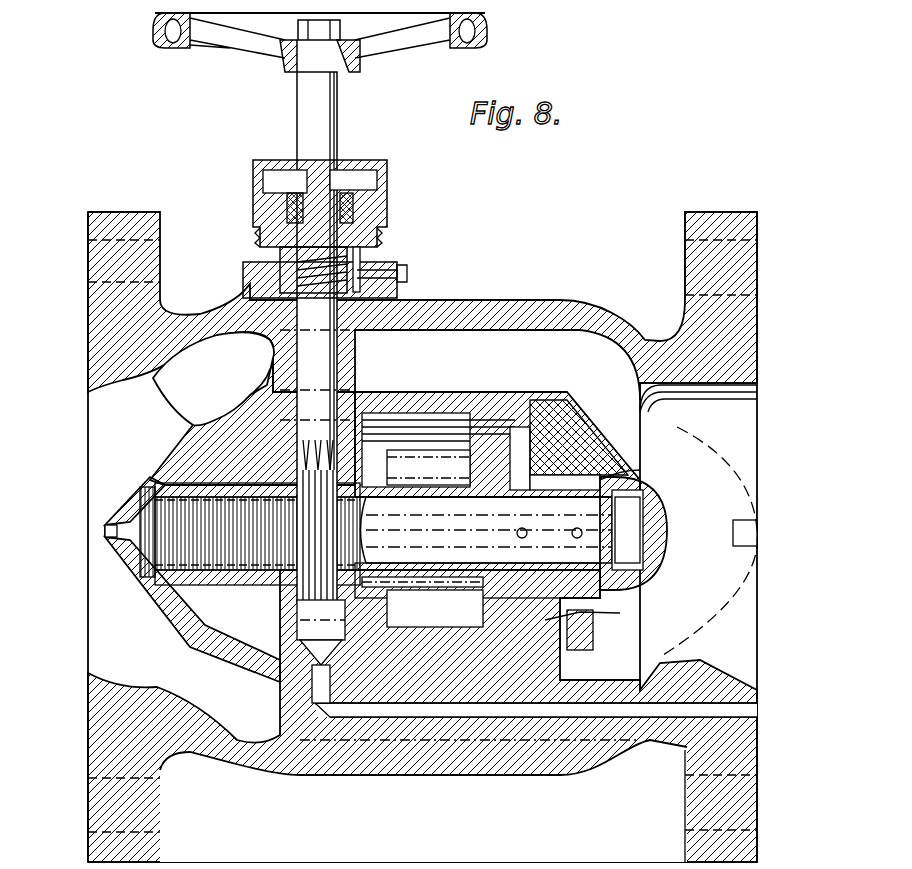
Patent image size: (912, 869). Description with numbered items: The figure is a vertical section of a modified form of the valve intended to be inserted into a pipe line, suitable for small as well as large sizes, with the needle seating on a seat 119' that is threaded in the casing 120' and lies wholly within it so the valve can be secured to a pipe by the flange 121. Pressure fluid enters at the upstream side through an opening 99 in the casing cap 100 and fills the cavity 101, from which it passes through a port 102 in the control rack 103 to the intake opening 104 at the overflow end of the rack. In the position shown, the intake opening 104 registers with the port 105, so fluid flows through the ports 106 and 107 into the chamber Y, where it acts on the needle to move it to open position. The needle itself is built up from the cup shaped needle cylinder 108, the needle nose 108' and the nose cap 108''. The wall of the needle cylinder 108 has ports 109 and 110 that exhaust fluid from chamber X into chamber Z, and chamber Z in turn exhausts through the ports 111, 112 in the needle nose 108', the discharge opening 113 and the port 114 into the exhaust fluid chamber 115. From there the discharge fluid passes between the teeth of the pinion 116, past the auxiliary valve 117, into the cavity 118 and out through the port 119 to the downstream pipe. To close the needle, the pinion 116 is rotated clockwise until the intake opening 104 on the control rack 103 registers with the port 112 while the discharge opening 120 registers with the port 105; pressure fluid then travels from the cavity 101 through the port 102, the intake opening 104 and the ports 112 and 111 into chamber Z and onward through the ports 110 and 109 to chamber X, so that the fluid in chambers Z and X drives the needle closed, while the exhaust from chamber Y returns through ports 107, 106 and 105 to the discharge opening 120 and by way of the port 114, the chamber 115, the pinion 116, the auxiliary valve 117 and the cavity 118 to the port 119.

The opening 99 is at (105, 535).
The casing cap 100 is at (142, 603).
The cavity 101 is at (105, 527).
The port 102 is at (170, 475).
The control rack 103 is at (688, 640).
The intake opening 104 is at (655, 527).
The port 105 is at (535, 612).
The port 106 is at (450, 643).
The port 107 is at (393, 580).
The needle cylinder 108 is at (593, 643).
The needle nose 108' is at (651, 465).
The nose cap 108'' is at (731, 542).
The port 109 is at (445, 415).
The port 110 is at (520, 440).
The port 111 is at (560, 450).
The port 112 is at (648, 505).
The discharge opening 113 is at (582, 536).
The port 114 is at (470, 573).
The exhaust fluid chamber 115 is at (367, 507).
The pinion 116 is at (385, 404).
The auxiliary valve 117 is at (320, 668).
The cavity 118 is at (327, 697).
The port 119 is at (536, 764).
The seat 119' is at (729, 404).
The discharge opening 120 is at (624, 599).
The casing 120' is at (393, 230).
The flange 121 is at (757, 236).
The chamber X is at (255, 422).
The chamber Y is at (401, 601).
The chamber Z is at (560, 418).